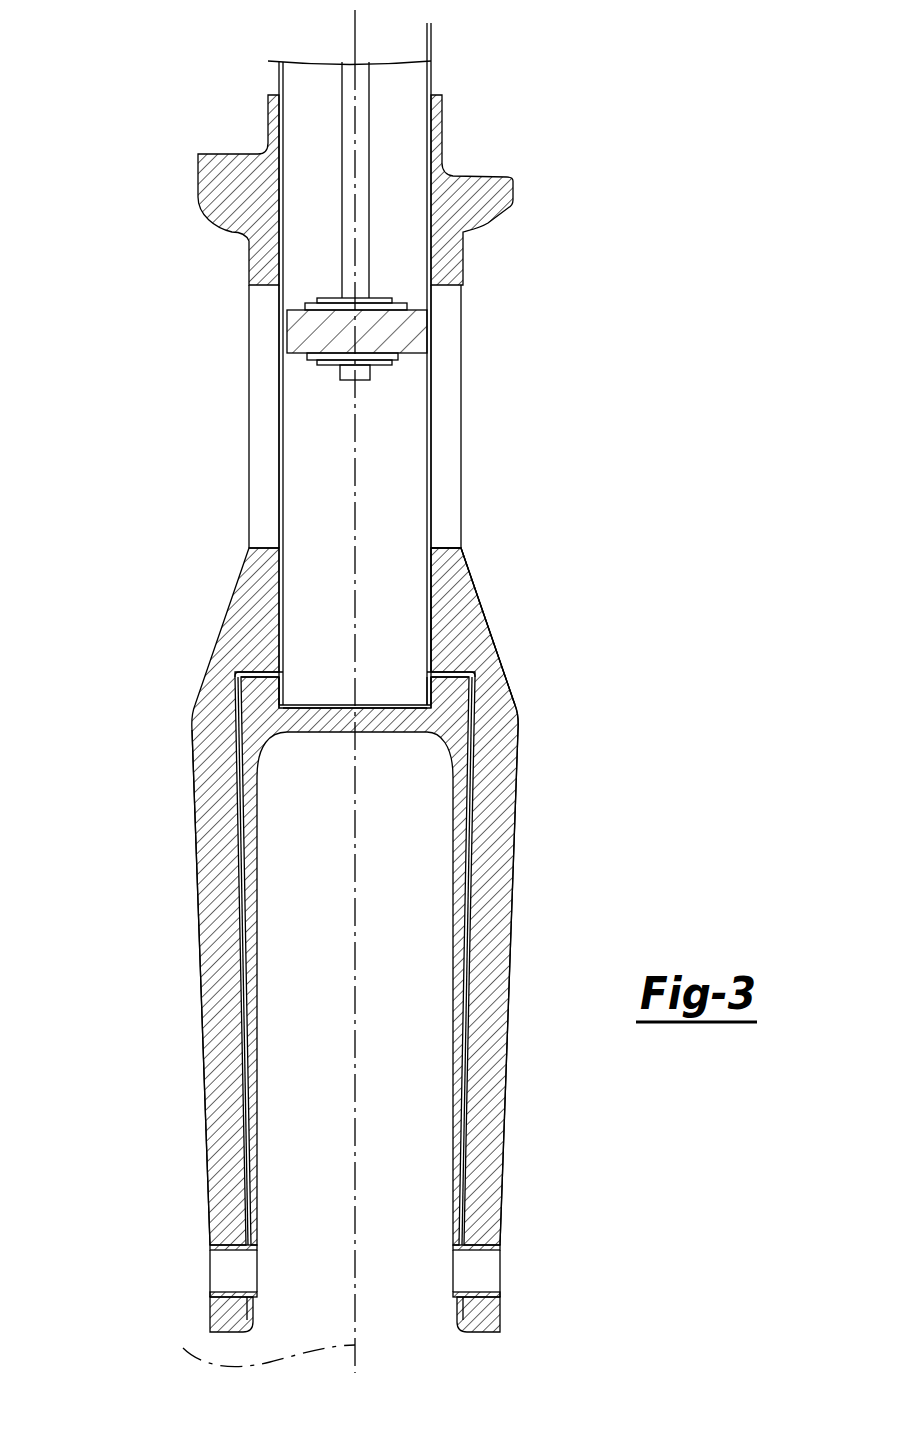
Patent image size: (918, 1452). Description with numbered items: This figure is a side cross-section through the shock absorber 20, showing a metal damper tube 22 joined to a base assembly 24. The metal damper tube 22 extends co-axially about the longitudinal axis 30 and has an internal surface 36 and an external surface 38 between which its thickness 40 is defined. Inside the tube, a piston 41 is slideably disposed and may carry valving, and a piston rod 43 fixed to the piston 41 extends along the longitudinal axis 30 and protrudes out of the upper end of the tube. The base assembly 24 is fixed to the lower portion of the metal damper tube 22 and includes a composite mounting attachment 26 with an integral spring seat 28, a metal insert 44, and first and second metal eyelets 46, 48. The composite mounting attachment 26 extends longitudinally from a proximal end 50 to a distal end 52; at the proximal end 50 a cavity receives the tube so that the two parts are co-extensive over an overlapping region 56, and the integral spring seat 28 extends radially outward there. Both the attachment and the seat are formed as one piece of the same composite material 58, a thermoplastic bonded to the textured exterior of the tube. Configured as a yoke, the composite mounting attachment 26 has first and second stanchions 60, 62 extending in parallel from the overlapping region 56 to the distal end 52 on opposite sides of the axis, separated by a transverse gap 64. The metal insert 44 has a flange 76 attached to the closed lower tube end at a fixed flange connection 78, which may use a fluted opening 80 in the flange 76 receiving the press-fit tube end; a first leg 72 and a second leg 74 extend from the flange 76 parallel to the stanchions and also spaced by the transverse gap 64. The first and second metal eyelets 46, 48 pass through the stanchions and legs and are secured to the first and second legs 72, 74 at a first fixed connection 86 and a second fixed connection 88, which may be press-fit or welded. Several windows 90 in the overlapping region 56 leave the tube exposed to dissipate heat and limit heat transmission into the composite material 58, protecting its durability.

The shock absorber 20 is at (680, 205).
The metal damper tube 22 is at (432, 515).
The base assembly 24 is at (569, 837).
The composite mounting attachment 26 is at (526, 725).
The integral spring seat 28 is at (490, 174).
The longitudinal axis 30 is at (257, 1346).
The internal surface 36 is at (427, 462).
The external surface 38 is at (431, 463).
The thickness 40 is at (377, 38).
The piston 41 is at (410, 338).
The piston rod 43 is at (347, 92).
The metal insert 44 is at (475, 669).
The first metal eyelet 46 is at (483, 1292).
The second metal eyelet 48 is at (230, 1292).
The proximal end 50 is at (278, 93).
The distal end 52 is at (510, 1315).
The overlapping region 56 is at (333, 364).
The composite material 58 is at (466, 618).
The first stanchion 60 is at (514, 922).
The second stanchion 62 is at (195, 932).
The transverse gap 64 is at (253, 1307).
The first leg 72 is at (475, 1092).
The second leg 74 is at (247, 1063).
The flange 76 is at (265, 668).
The fixed flange connection 78 is at (423, 687).
The fluted opening 80 is at (282, 703).
The first fixed connection 86 is at (480, 1240).
The second fixed connection 88 is at (222, 1243).
The windows 90 is at (448, 352).